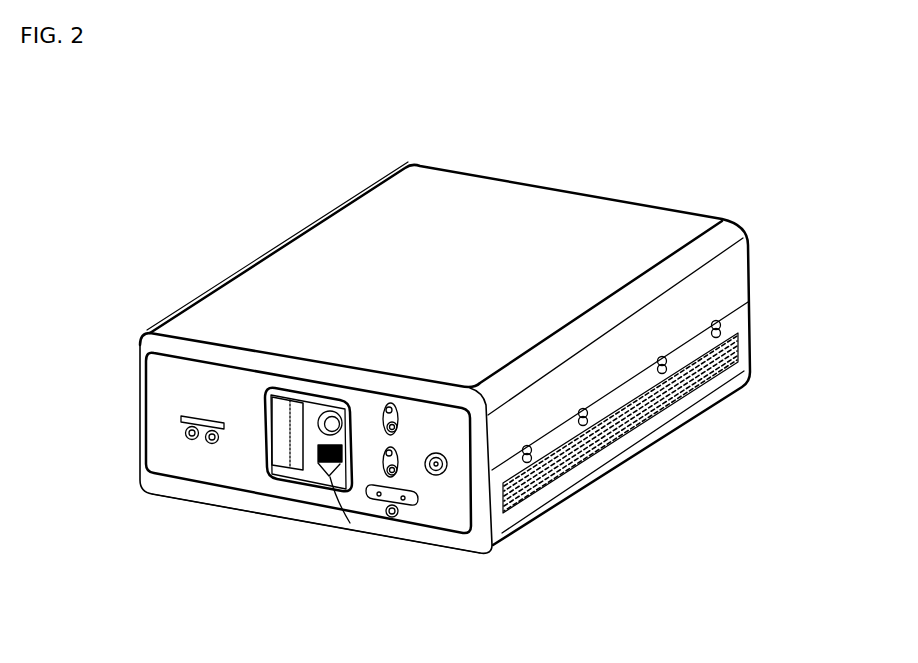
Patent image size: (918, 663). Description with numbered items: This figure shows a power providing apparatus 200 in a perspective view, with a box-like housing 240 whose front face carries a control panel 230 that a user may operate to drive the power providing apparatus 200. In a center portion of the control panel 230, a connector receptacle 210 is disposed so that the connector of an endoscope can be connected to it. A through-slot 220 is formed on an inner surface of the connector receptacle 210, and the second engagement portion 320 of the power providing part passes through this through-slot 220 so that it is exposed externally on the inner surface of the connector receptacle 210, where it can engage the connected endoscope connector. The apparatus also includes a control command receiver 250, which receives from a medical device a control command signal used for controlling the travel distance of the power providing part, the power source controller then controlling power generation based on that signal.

The power providing apparatus 200 is at (143, 110).
The connector receptacle 210 is at (400, 524).
The through-slot 220 is at (305, 445).
The control panel 230 is at (202, 388).
The housing 240 is at (310, 232).
The control command receiver 250 is at (317, 447).
The second engagement portion 320 is at (300, 407).